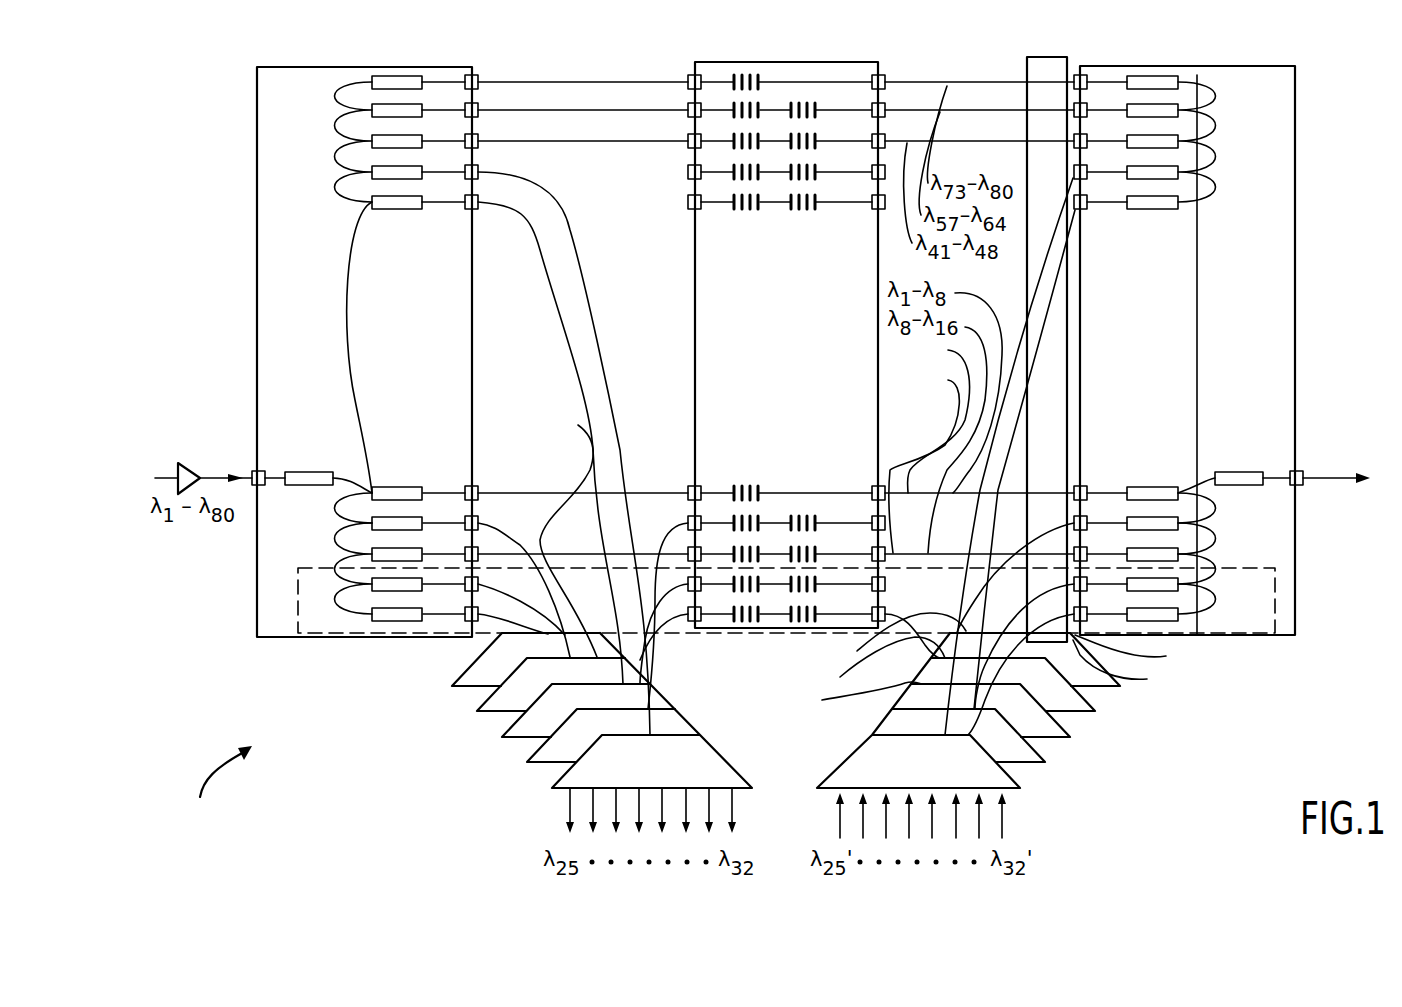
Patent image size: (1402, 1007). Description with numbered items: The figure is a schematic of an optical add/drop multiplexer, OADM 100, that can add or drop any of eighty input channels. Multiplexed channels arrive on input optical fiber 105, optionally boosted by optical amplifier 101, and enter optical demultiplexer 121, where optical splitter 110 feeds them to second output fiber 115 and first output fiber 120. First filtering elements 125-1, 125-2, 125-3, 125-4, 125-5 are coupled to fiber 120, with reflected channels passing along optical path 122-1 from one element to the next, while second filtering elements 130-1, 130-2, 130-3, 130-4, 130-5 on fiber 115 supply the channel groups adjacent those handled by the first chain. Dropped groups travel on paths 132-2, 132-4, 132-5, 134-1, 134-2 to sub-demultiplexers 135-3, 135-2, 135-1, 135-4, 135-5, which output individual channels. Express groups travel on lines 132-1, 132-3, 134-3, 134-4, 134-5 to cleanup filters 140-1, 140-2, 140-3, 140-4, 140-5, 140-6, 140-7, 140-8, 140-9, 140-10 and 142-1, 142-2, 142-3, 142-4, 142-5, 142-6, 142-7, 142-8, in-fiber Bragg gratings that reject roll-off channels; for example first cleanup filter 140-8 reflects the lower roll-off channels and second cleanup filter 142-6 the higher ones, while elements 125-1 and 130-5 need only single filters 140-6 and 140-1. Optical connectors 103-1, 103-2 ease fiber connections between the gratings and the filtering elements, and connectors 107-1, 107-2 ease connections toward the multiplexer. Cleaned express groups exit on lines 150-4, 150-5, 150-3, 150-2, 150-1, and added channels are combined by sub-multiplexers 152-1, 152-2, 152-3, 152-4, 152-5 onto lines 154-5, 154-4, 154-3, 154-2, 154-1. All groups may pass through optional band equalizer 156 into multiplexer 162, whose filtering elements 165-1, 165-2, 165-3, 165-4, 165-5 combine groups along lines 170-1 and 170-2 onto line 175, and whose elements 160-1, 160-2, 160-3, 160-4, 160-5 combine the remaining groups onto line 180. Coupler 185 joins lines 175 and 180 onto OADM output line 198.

The OADM 100 is at (213, 785).
The optical amplifier 101 is at (200, 468).
The input optical fiber 105 is at (213, 477).
The optical splitter 110 is at (293, 477).
The second output fiber 115 is at (358, 465).
The first output fiber 120 is at (372, 498).
The optical demultiplexer 121 is at (257, 117).
The optical path 122-1 is at (372, 520).
The first filtering element 125-1 is at (421, 487).
The first filtering element 125-2 is at (431, 517).
The first filtering element 125-3 is at (342, 568).
The first filtering element 125-4 is at (372, 604).
The first filtering element 125-5 is at (373, 620).
The second filtering element 130-1 is at (372, 196).
The second filtering element 130-2 is at (372, 166).
The second filtering element 130-3 is at (372, 135).
The second filtering element 130-4 is at (372, 104).
The second filtering element 130-5 is at (372, 78).
The line 132-1 is at (492, 493).
The optical path 132-2 is at (556, 531).
The optical path 132-3 is at (498, 530).
The optical path 132-4 is at (506, 532).
The optical path 132-5 is at (500, 633).
The fiber 134-1 is at (484, 88).
The optical path 134-2 is at (484, 116).
The line 134-3 is at (484, 147).
The fiber 134-4 is at (553, 196).
The line 134-5 is at (560, 312).
The sub-demultiplexer 135-1 is at (452, 686).
The sub-demultiplexer 135-2 is at (477, 712).
The sub-demultiplexer 135-3 is at (502, 738).
The sub-demultiplexer 135-4 is at (527, 764).
The sub-demultiplexer 135-5 is at (553, 788).
The cleanup filter 140-1 is at (733, 83).
The cleanup filter 140-2 is at (733, 111).
The cleanup filter 140-3 is at (733, 141).
The cleanup filter 140-4 is at (733, 172).
The cleanup filter 140-5 is at (733, 202).
The cleanup filter 140-6 is at (733, 612).
The cleanup filter 140-7 is at (733, 584).
The first cleanup filter 140-8 is at (733, 554).
The cleanup filter 140-9 is at (733, 523).
The cleanup filter 140-10 is at (733, 493).
The cleanup filter 142-1 is at (783, 120).
The cleanup filter 142-2 is at (783, 150).
The cleanup filter 142-3 is at (785, 180).
The cleanup filter 142-4 is at (792, 210).
The cleanup filter 142-5 is at (788, 605).
The second cleanup filter 142-6 is at (793, 577).
The cleanup filter 142-7 is at (797, 547).
The cleanup filter 142-8 is at (800, 516).
The optical connector 103-1 is at (685, 76).
The optical connector 103-2 is at (480, 76).
The connector 107-1 is at (885, 78).
The connector 107-2 is at (1087, 75).
The line 150-1 is at (1063, 82).
The line 150-2 is at (1063, 110).
The line 150-3 is at (1063, 141).
The line 150-4 is at (927, 415).
The line 150-5 is at (922, 459).
The sub-multiplexer 152-1 is at (1120, 686).
The sub-multiplexer 152-2 is at (1095, 711).
The sub-multiplexer 152-3 is at (1070, 737).
The sub-multiplexer 152-4 is at (1045, 762).
The sub-multiplexer 152-5 is at (1020, 788).
The line 154-1 is at (1153, 649).
The line 154-2 is at (1143, 664).
The line 154-3 is at (880, 638).
The line 154-4 is at (860, 663).
The output line 154-5 is at (838, 697).
The band equalizer 156 is at (1066, 380).
The filtering element 160-1 is at (1177, 203).
The filtering element 160-2 is at (1177, 173).
The filtering element 160-3 is at (1177, 142).
The filtering element 160-4 is at (1177, 111).
The filtering element 160-5 is at (1177, 83).
The multiplexer 162 is at (1295, 295).
The filtering element 165-1 is at (1153, 487).
The filtering element 165-2 is at (1123, 517).
The filtering element 165-3 is at (1200, 588).
The filtering element 165-4 is at (1200, 616).
The filtering element 165-5 is at (1200, 643).
The line 170-1 is at (1200, 530).
The line 170-2 is at (1200, 558).
The line 175 is at (1200, 495).
The line 180 is at (1198, 338).
The coupler 185 is at (1250, 470).
The OADM output line 198 is at (1335, 475).